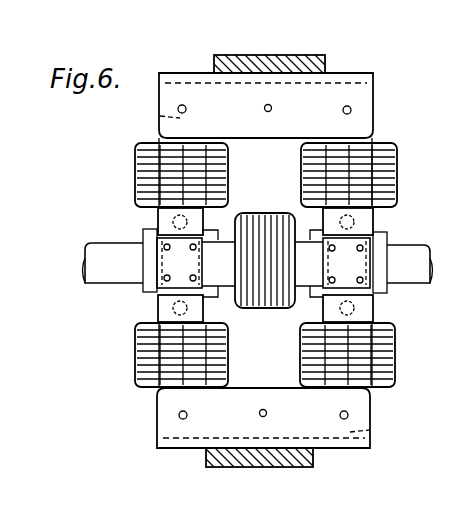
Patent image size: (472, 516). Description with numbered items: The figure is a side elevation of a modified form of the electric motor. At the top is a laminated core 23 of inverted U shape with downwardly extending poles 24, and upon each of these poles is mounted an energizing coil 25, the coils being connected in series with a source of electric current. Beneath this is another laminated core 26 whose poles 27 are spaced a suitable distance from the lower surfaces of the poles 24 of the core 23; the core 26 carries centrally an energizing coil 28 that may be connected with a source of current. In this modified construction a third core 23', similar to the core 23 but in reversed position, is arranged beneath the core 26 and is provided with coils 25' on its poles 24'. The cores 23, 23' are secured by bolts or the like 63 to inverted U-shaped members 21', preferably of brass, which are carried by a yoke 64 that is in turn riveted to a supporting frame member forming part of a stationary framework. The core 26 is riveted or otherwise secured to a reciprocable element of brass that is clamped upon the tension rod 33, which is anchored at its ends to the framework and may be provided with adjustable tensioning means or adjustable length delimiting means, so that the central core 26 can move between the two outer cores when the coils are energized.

The inverted U-shaped member 21' is at (260, 260).
The laminated core 23 is at (151, 117).
The third core 23' is at (379, 435).
The poles 24 is at (273, 221).
The poles 24' is at (269, 322).
The energizing coil 25 is at (253, 165).
The coils 25' is at (265, 355).
The laminated core 26 is at (223, 270).
The poles 27 is at (185, 270).
The energizing coil 28 is at (267, 237).
The tension rod 33 is at (118, 276).
The bolts 63 is at (272, 108).
The yoke 64 is at (262, 61).